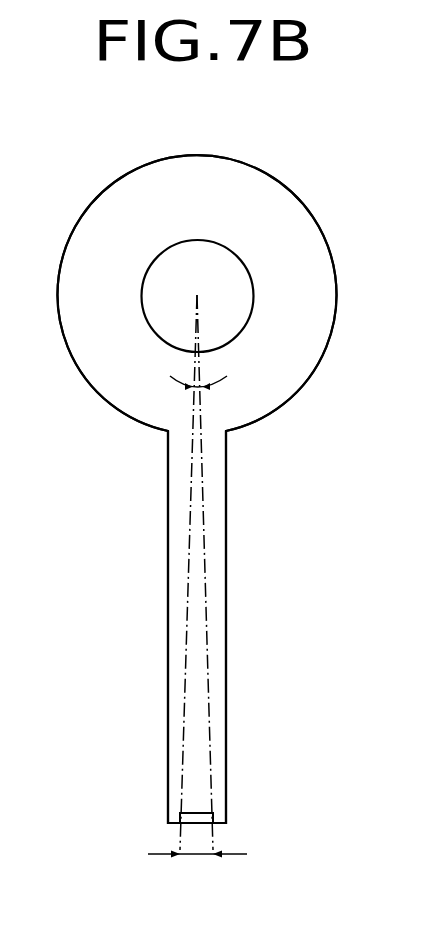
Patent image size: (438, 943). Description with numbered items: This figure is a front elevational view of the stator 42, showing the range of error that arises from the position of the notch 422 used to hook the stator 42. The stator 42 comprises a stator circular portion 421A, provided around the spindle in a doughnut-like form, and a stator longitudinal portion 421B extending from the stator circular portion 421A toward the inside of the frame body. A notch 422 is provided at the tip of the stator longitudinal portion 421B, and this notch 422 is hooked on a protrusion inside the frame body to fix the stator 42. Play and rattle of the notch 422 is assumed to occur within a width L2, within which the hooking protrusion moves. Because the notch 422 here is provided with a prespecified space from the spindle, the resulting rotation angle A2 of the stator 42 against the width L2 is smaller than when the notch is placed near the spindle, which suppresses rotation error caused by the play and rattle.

The stator 42 is at (270, 174).
The stator circular portion 421A is at (305, 369).
The stator longitudinal portion 421B is at (226, 542).
The notch 422 is at (212, 828).
The rotation angle A2 is at (199, 391).
The width L2 is at (197, 874).